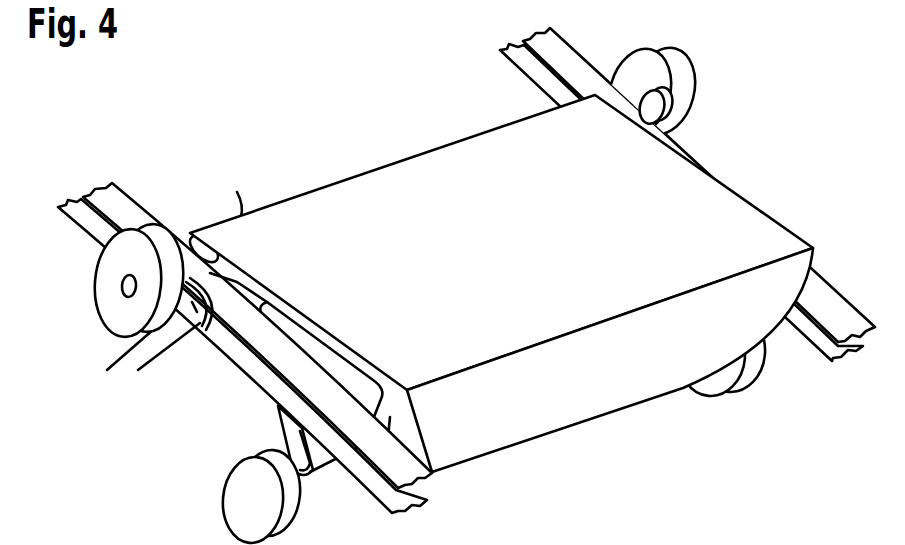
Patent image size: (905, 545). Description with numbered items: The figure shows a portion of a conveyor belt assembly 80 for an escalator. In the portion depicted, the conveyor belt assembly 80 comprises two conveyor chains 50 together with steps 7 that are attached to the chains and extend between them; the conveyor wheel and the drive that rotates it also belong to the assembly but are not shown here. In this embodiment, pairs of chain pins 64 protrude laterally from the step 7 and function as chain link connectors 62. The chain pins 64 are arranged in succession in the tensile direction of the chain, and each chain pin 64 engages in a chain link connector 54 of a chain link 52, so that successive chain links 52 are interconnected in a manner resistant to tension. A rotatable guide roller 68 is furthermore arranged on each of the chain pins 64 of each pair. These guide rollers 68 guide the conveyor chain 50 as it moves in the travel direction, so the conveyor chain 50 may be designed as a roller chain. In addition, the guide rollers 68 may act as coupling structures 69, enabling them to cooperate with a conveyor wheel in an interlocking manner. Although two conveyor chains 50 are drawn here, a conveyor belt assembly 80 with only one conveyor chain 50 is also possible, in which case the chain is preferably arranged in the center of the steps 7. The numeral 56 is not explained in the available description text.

The step 7 is at (633, 356).
The conveyor belt assembly 80 is at (306, 133).
The conveyor chain 50 is at (63, 182).
The chain link 52 is at (72, 236).
The rail running surface 56 is at (115, 190).
The chain link connector 54 is at (222, 338).
The chain link connector 62 is at (192, 222).
The chain pin 64 is at (213, 243).
The guide roller 68 is at (123, 342).
The coupling structure 69 is at (124, 356).